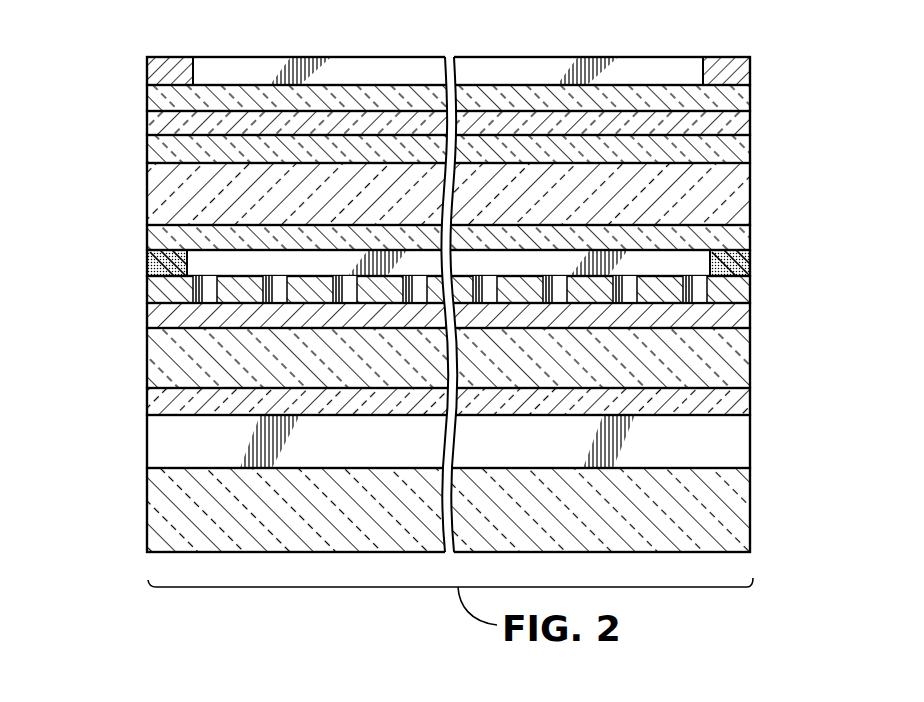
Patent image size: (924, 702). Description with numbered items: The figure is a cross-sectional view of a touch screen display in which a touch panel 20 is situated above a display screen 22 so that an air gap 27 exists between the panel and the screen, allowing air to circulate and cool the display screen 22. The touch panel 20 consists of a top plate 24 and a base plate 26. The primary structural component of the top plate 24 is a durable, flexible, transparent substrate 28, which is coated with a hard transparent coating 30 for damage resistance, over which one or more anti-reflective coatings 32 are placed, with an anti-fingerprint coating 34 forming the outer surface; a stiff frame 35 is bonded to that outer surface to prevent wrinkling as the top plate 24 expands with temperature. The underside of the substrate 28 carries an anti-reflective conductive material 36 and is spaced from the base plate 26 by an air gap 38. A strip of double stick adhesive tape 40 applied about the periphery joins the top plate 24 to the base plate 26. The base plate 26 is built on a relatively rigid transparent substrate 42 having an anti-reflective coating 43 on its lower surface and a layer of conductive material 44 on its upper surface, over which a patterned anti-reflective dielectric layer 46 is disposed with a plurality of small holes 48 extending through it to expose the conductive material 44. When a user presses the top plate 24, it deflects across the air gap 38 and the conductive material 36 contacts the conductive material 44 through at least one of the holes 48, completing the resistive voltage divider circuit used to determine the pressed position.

The touch panel 20 is at (133, 431).
The display screen 22 is at (752, 508).
The top plate 24 is at (836, 79).
The base plate 26 is at (836, 271).
The air gap 27 is at (736, 447).
The substrate 28 is at (752, 195).
The hard transparent coating 30 is at (147, 150).
The anti-reflective coatings 32 is at (752, 120).
The anti-fingerprint coating 34 is at (147, 100).
The stiff frame 35 is at (147, 62).
The anti-reflective conductive material 36 is at (752, 236).
The air gap 38 is at (212, 262).
The double stick adhesive tape 40 is at (752, 261).
The transparent substrate 42 is at (152, 366).
The anti-reflective coating 43 is at (752, 396).
The conductive material 44 is at (752, 311).
The patterned anti-reflective dielectric layer 46 is at (147, 292).
The holes 48 is at (205, 301).